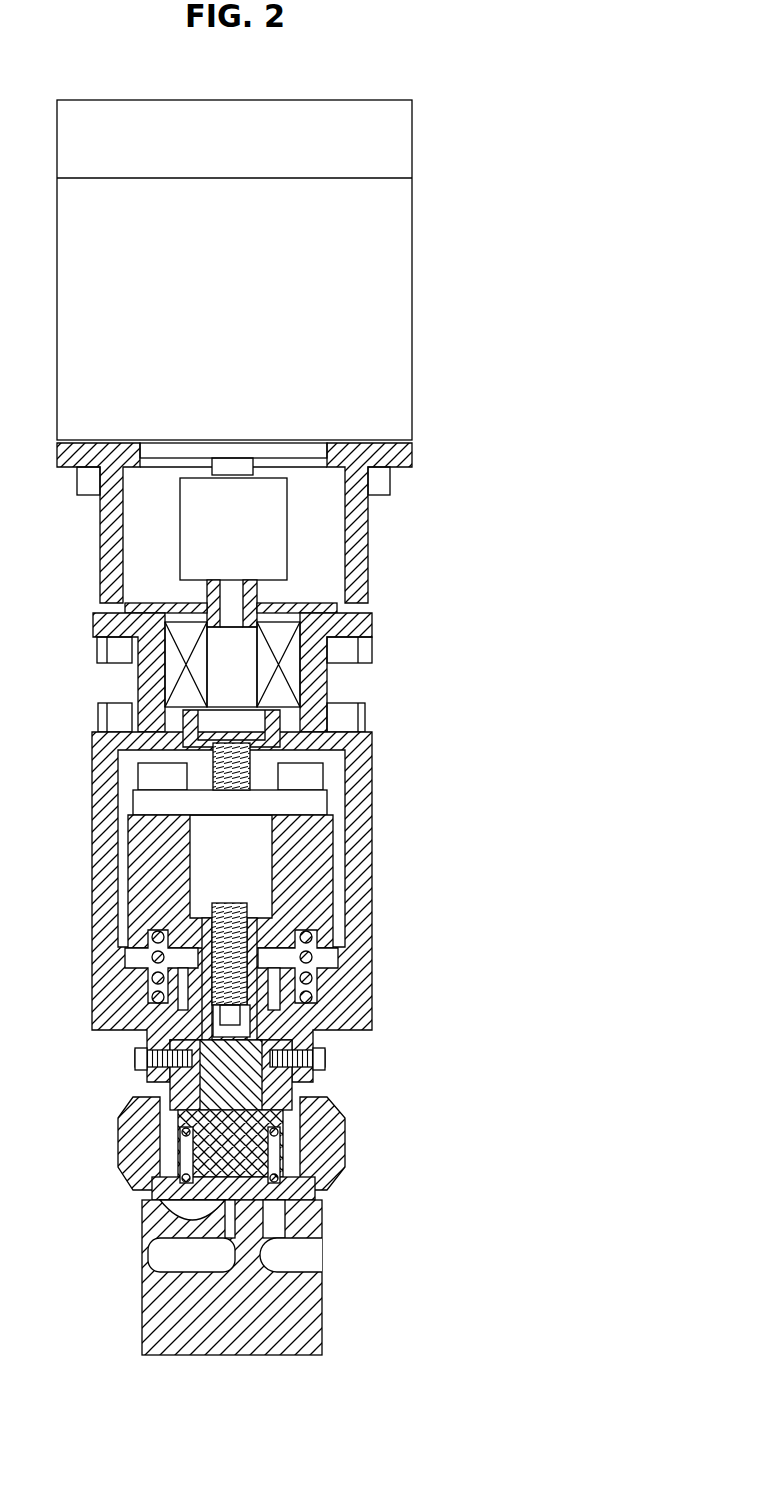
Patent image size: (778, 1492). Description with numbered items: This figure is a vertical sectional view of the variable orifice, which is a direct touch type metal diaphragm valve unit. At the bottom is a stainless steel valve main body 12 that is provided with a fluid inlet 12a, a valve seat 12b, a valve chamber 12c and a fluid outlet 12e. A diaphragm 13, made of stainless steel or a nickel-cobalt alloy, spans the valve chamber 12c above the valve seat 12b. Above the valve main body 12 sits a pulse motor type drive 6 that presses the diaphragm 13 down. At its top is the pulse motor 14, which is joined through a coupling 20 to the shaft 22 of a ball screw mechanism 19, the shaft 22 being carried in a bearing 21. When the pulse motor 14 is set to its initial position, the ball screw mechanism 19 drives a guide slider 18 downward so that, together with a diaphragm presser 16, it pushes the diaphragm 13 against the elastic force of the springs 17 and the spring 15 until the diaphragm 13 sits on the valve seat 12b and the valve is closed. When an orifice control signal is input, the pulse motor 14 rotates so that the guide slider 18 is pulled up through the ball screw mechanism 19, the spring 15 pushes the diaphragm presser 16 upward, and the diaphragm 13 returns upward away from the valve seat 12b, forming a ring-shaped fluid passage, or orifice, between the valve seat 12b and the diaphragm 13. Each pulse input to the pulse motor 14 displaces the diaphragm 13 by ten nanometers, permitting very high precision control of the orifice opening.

The pulse motor type drive 6 is at (523, 485).
The valve main body 12 is at (236, 1273).
The fluid inlet 12a is at (163, 1257).
The valve seat 12b is at (147, 1230).
The valve chamber 12c is at (285, 1220).
The fluid outlet 12e is at (295, 1257).
The diaphragm 13 is at (180, 1213).
The pulse motor 14 is at (383, 318).
The spring 15 is at (128, 1152).
The diaphragm presser 16 is at (237, 1153).
The springs 17 is at (323, 955).
The guide slider 18 is at (300, 873).
The ball screw mechanism 19 is at (198, 780).
The coupling 20 is at (237, 532).
The bearing 21 is at (290, 675).
The shaft 22 is at (247, 772).